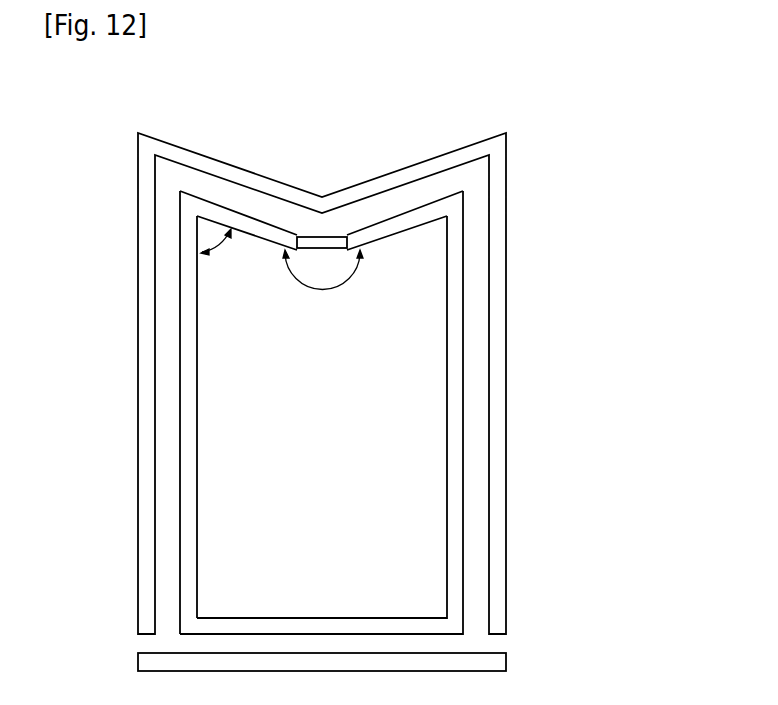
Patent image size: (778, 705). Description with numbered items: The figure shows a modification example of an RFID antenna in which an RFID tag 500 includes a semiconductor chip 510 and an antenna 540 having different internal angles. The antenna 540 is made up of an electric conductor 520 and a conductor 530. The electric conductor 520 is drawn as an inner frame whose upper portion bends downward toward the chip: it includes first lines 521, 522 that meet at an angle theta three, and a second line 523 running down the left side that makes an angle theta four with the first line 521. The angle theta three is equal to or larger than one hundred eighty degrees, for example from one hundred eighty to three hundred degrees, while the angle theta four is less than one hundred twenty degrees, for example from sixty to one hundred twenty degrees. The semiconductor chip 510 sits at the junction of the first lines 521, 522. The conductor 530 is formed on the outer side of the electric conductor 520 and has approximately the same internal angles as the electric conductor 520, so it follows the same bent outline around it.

The RFID tag 500 is at (104, 88).
The semiconductor chip 510 is at (313, 236).
The electric conductor 520 is at (455, 512).
The first line 521 is at (213, 210).
The first line 522 is at (412, 218).
The second line 523 is at (188, 335).
The conductor 530 is at (498, 663).
The antenna 540 is at (628, 518).